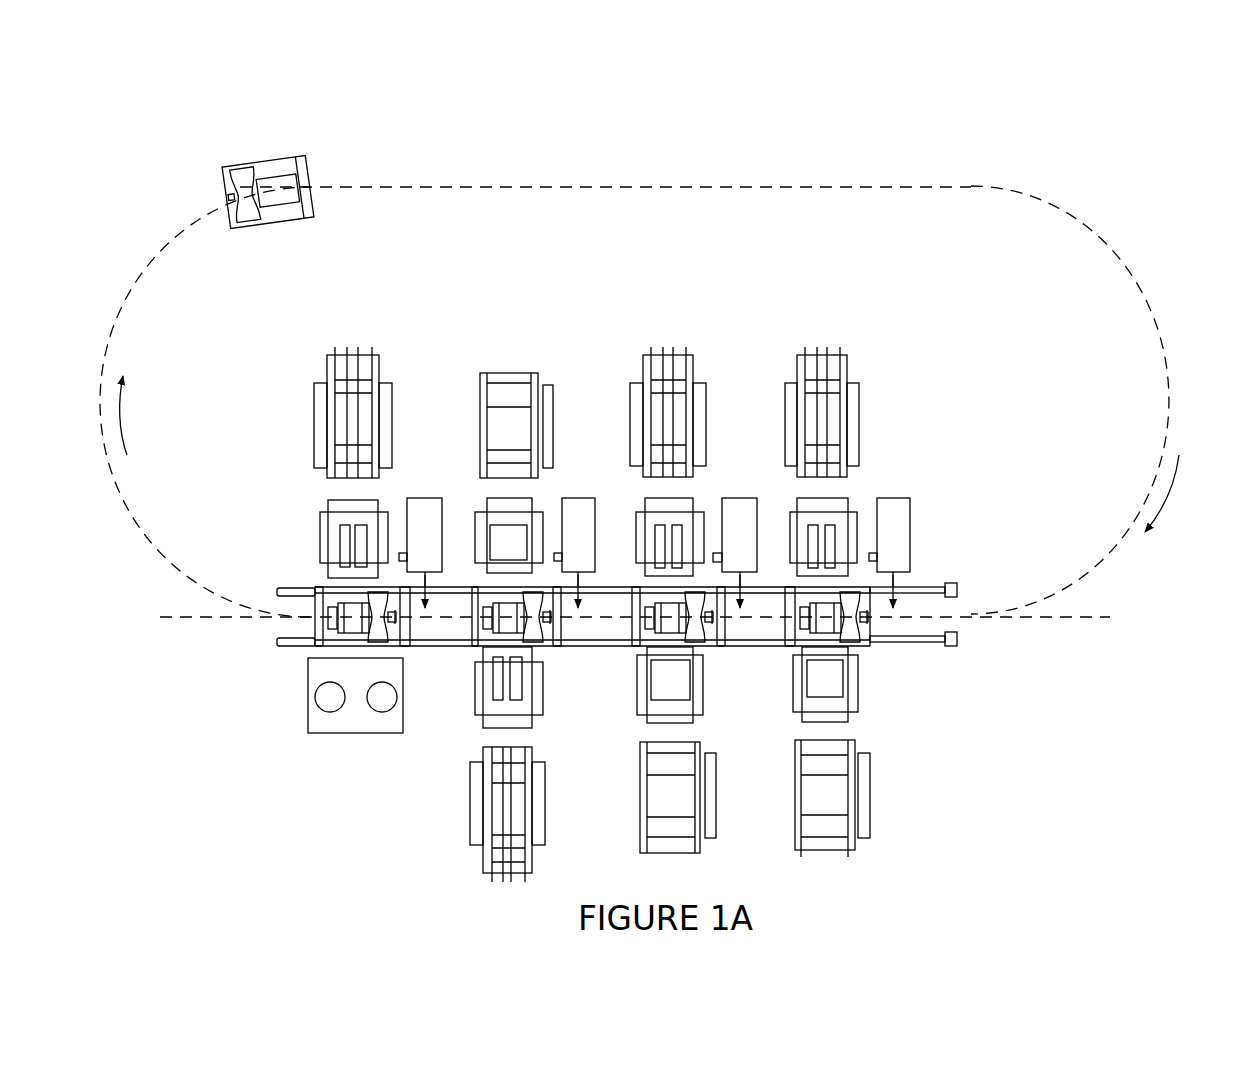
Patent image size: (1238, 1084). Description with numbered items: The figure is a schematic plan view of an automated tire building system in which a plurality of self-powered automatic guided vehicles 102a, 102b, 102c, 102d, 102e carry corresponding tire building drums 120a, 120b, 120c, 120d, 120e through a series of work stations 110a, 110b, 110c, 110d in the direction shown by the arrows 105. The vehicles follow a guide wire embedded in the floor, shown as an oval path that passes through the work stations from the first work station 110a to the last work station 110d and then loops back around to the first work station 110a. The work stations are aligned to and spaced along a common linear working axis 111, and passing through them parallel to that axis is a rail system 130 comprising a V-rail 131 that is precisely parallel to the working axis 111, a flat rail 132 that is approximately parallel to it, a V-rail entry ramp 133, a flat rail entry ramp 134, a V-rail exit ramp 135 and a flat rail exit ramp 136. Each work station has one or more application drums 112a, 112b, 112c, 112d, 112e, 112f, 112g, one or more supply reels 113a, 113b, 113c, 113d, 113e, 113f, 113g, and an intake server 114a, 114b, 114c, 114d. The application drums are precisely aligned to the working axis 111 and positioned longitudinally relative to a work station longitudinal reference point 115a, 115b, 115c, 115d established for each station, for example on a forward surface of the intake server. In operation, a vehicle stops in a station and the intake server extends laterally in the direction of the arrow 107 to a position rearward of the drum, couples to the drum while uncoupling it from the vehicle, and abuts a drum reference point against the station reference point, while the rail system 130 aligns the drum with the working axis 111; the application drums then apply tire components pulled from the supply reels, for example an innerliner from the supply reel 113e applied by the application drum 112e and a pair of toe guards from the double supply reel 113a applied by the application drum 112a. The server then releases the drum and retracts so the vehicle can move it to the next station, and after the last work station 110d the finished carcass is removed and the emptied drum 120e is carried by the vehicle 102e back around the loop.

The automatic guided vehicle 102a is at (839, 658).
The automatic guided vehicle 102b is at (674, 657).
The automatic guided vehicle 102c is at (514, 659).
The automatic guided vehicle 102d is at (359, 667).
The automatic guided vehicle 102e is at (283, 193).
The arrows 105 is at (122, 408).
The arrow 107 is at (433, 588).
The first work station 110a is at (831, 318).
The second work station 110b is at (676, 310).
The work station 110c is at (513, 310).
The last work station 110d is at (354, 310).
The working axis 111 is at (205, 619).
The application drum 112a is at (848, 500).
The application drum 112b is at (693, 500).
The application drum 112c is at (533, 500).
The application drum 112d is at (378, 500).
The application drum 112e is at (858, 712).
The application drum 112f is at (704, 706).
The application drum 112g is at (544, 706).
The supply reel 113a is at (848, 358).
The supply reel 113b is at (694, 356).
The supply reel 113c is at (527, 378).
The supply reel 113d is at (373, 356).
The supply reel 113e is at (855, 848).
The supply reel 113f is at (700, 850).
The supply reel 113g is at (532, 870).
The intake server 114a is at (921, 524).
The intake server 114b is at (745, 482).
The intake server 114c is at (590, 482).
The intake server 114d is at (431, 482).
The work station longitudinal reference point 115a is at (877, 557).
The work station longitudinal reference point 115b is at (722, 556).
The work station longitudinal reference point 115c is at (562, 556).
The work station longitudinal reference point 115d is at (406, 556).
The tire building drum 120a is at (812, 628).
The tire building drum 120b is at (648, 628).
The tire building drum 120c is at (490, 628).
The tire building drum 120d is at (332, 628).
The tire building drum 120e is at (278, 159).
The rail system 130 is at (636, 623).
The V-rail 131 is at (937, 587).
The flat rail 132 is at (912, 645).
The V-rail entry ramp 133 is at (958, 590).
The flat rail entry ramp 134 is at (960, 646).
The V-rail exit ramp 135 is at (286, 588).
The flat rail exit ramp 136 is at (278, 641).